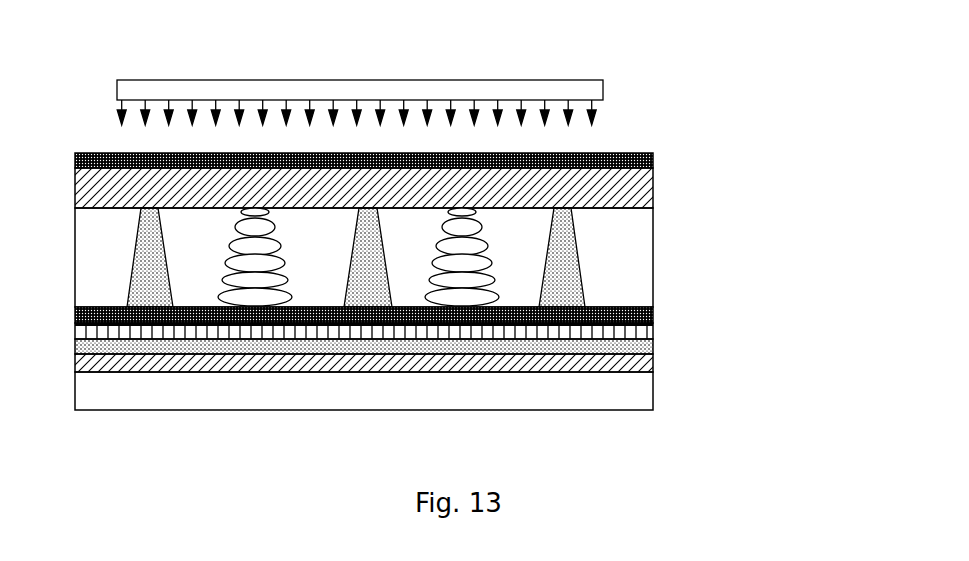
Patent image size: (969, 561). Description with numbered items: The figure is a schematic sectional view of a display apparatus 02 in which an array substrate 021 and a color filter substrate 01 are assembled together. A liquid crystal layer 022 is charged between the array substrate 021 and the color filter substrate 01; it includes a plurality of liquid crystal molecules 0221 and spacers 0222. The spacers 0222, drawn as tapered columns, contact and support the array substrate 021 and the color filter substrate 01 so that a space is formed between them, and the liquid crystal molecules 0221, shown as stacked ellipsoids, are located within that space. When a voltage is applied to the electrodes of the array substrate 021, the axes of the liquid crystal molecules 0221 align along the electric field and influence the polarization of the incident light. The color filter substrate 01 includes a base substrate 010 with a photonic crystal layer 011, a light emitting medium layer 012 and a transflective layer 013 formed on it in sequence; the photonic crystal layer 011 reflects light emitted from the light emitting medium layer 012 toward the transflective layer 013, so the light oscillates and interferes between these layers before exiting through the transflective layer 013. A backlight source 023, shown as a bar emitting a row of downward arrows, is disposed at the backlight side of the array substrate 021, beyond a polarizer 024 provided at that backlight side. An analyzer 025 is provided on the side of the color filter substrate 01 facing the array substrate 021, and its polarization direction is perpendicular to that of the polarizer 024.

The color filter substrate 01 is at (441, 373).
The base substrate 010 is at (375, 413).
The photonic crystal layer 011 is at (653, 370).
The light emitting medium layer 012 is at (653, 347).
The transflective layer 013 is at (653, 328).
The display apparatus 02 is at (130, 54).
The array substrate 021 is at (654, 181).
The liquid crystal layer 022 is at (393, 257).
The liquid crystal molecules 0221 is at (323, 267).
The spacers 0222 is at (202, 255).
The backlight source 023 is at (603, 93).
The polarizer 024 is at (654, 163).
The analyzer 025 is at (653, 308).